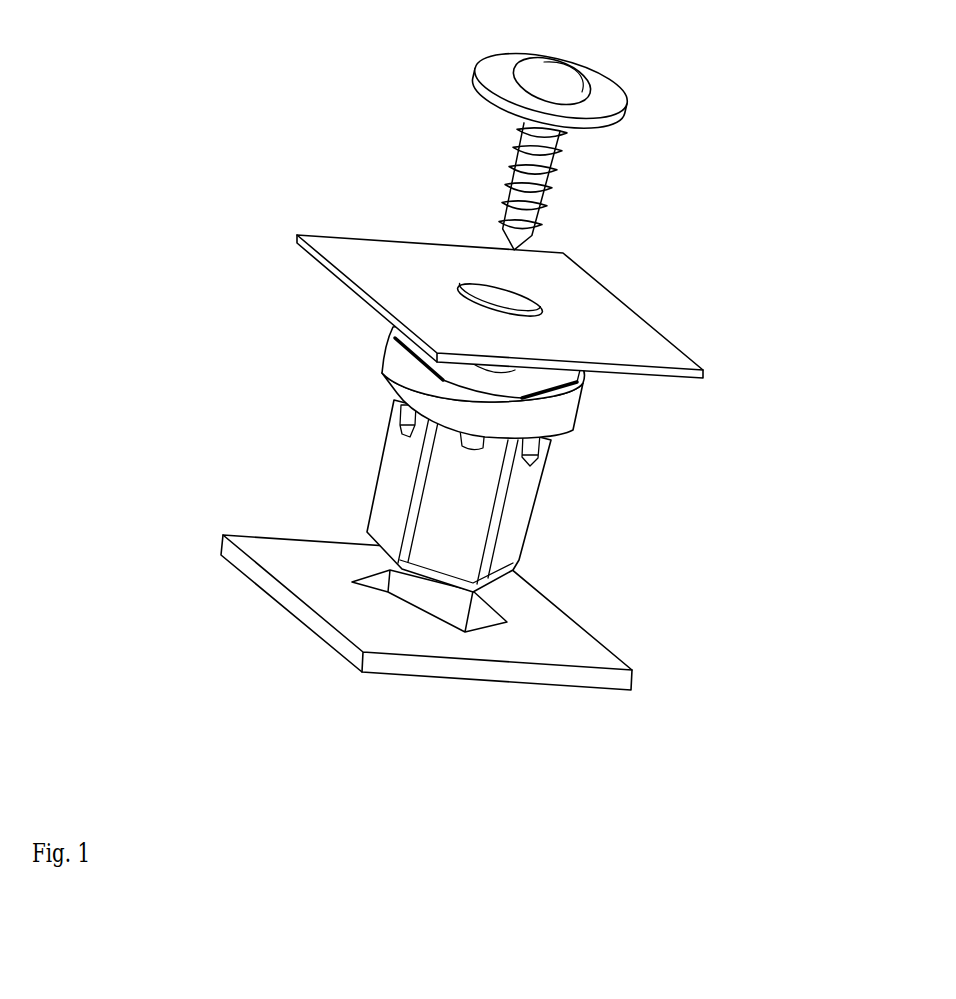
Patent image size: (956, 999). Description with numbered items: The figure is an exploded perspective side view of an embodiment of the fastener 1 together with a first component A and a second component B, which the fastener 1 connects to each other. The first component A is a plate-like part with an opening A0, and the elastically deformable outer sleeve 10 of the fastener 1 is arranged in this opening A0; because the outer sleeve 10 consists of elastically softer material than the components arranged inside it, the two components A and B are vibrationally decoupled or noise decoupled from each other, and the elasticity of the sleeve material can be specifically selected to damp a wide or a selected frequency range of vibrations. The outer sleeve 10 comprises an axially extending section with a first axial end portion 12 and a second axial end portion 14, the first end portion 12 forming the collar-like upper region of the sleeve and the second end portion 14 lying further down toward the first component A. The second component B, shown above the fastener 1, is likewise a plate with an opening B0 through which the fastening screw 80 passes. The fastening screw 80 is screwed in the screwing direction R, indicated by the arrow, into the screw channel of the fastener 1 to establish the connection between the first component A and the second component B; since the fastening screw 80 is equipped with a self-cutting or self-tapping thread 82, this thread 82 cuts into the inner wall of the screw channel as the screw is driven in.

The fastener 1 is at (583, 485).
The outer sleeve 10 is at (397, 470).
The first axial end portion 12 is at (393, 397).
The second axial end portion 14 is at (383, 525).
The fastening screw 80 is at (491, 122).
The self-cutting and/or self-tapping thread 82 is at (557, 172).
The first component A is at (258, 597).
The opening of component A A0 is at (390, 605).
The second component B is at (330, 267).
The opening in second component B0 is at (470, 299).
The screwing direction R is at (412, 703).